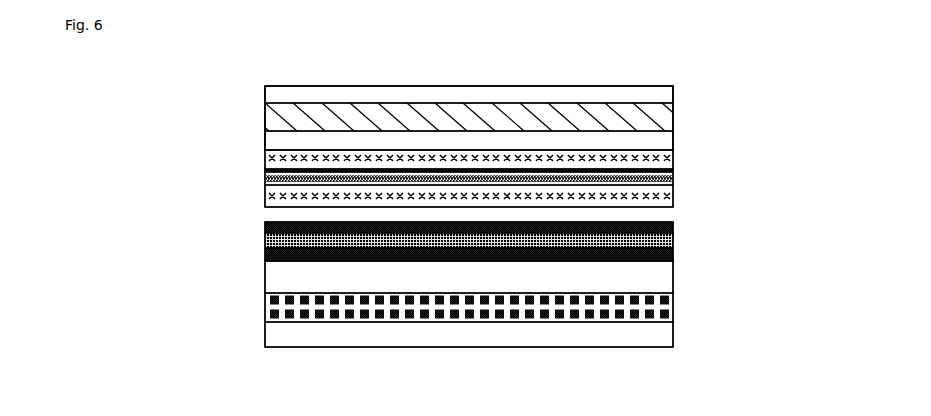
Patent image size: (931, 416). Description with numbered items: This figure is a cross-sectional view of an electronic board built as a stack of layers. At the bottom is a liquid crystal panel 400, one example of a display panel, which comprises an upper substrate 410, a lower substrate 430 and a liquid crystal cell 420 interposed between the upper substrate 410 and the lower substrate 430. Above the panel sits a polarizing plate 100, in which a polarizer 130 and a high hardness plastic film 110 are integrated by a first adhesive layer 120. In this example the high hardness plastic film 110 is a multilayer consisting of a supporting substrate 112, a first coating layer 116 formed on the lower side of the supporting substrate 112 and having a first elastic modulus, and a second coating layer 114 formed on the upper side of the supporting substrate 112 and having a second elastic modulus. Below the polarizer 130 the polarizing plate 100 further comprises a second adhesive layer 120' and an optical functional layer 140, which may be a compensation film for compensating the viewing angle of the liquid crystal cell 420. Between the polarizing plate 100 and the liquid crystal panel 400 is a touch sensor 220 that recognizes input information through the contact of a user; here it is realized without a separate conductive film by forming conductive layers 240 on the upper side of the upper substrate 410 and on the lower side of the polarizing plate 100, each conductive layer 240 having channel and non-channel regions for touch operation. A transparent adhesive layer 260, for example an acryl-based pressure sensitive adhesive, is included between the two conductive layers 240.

The polarizing plate 100 is at (830, 102).
The high hardness plastic film 110 is at (774, 69).
The second coating layer 114 is at (662, 96).
The supporting substrate 112 is at (662, 123).
The first coating layer 116 is at (662, 142).
The first adhesive layer 120 is at (539, 150).
The polarizer 130 is at (662, 178).
The second adhesive layer 120' is at (541, 183).
The optical functional layer 140 is at (662, 217).
The touch sensor 220 is at (195, 268).
The conductive layer 240 is at (256, 229).
The transparent adhesive layer 260 is at (264, 243).
The liquid crystal panel 400 is at (832, 247).
The upper substrate 410 is at (662, 278).
The liquid crystal cell 420 is at (662, 312).
The lower substrate 430 is at (662, 338).